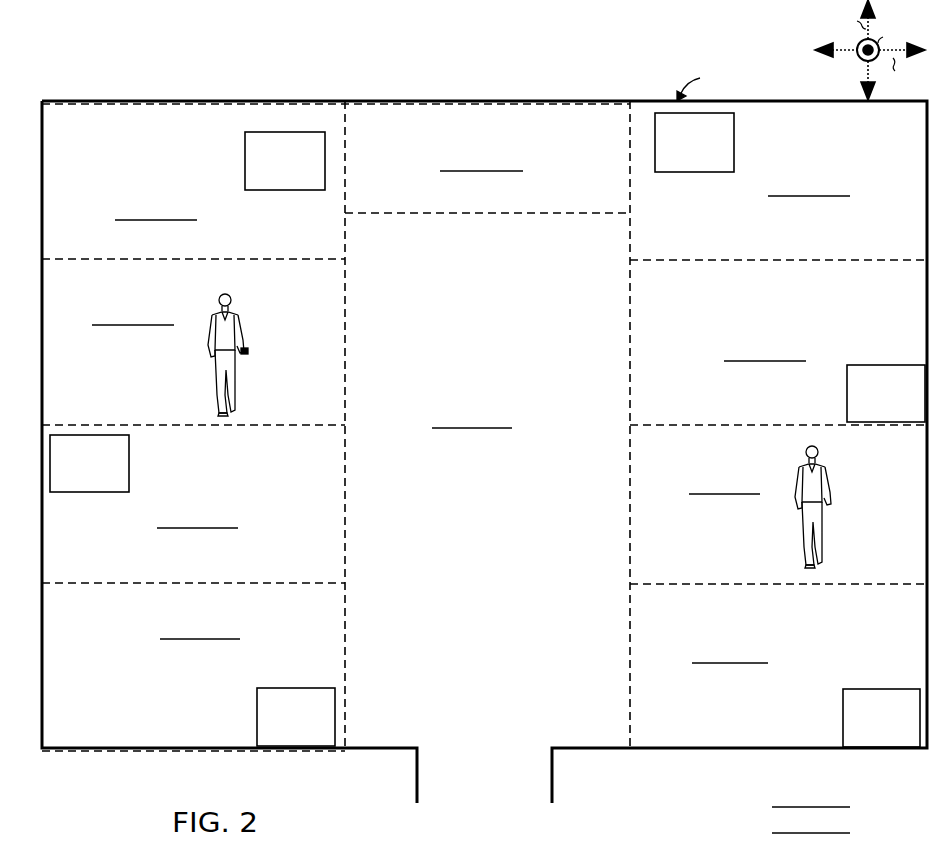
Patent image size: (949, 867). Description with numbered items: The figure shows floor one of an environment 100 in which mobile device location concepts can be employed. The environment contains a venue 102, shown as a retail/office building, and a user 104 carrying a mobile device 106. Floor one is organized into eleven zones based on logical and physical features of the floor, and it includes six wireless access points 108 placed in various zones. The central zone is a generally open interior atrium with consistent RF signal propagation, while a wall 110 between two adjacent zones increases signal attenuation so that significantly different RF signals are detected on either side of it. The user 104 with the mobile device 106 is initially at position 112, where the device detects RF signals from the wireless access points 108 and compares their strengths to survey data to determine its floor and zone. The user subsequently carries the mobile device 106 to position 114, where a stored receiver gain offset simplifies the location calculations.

The environment 100 is at (525, 23).
The venue 102 is at (517, 72).
The user 104 is at (231, 292).
The mobile device 106 is at (247, 352).
The wireless access points 108 is at (487, 430).
The wall 110 is at (207, 582).
The position 112 is at (247, 383).
The position 114 is at (792, 529).